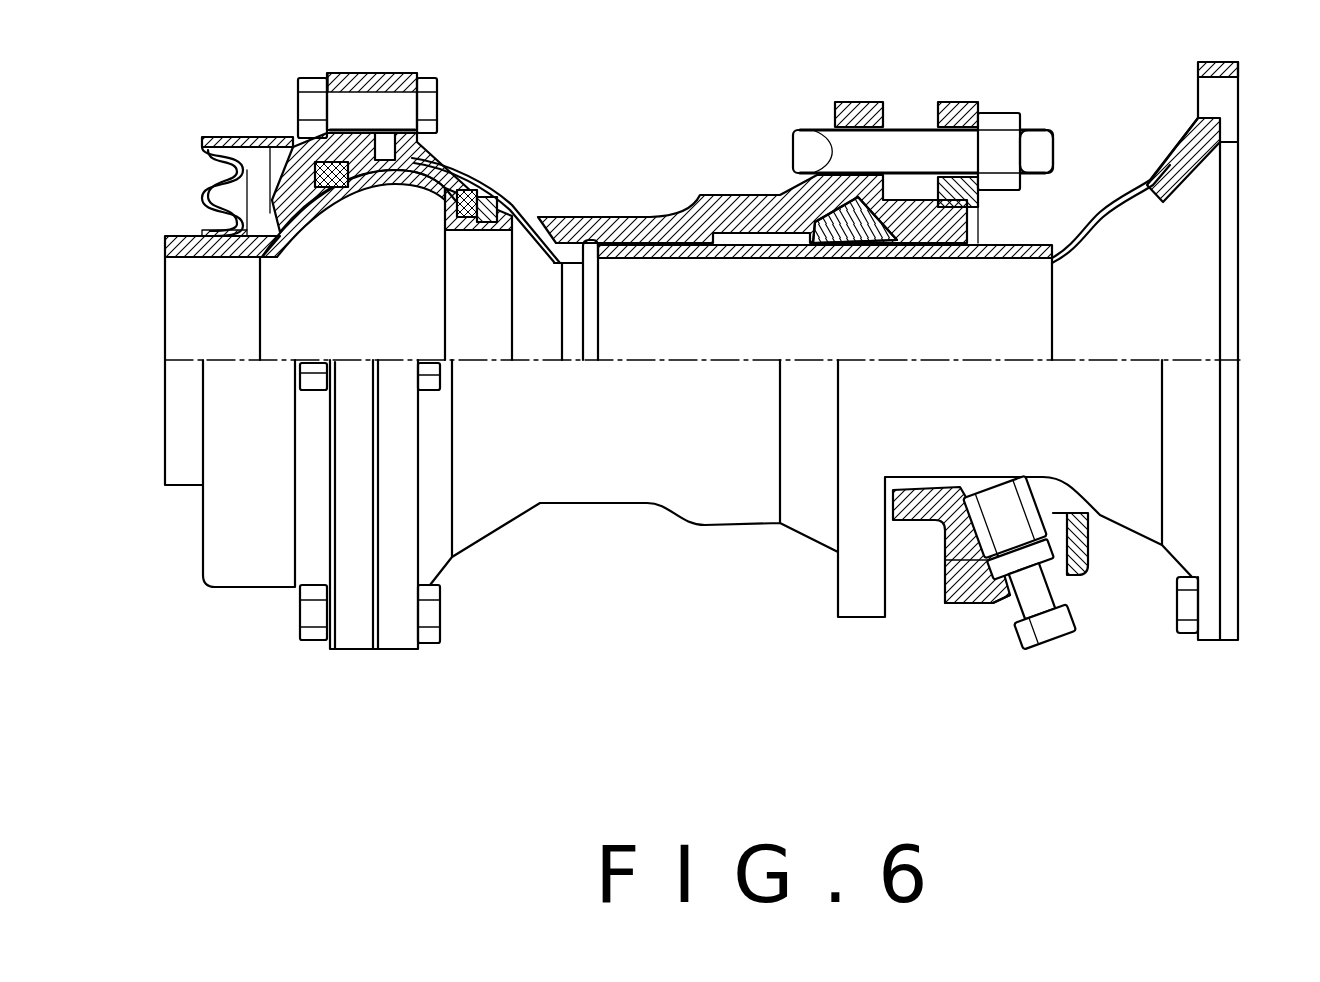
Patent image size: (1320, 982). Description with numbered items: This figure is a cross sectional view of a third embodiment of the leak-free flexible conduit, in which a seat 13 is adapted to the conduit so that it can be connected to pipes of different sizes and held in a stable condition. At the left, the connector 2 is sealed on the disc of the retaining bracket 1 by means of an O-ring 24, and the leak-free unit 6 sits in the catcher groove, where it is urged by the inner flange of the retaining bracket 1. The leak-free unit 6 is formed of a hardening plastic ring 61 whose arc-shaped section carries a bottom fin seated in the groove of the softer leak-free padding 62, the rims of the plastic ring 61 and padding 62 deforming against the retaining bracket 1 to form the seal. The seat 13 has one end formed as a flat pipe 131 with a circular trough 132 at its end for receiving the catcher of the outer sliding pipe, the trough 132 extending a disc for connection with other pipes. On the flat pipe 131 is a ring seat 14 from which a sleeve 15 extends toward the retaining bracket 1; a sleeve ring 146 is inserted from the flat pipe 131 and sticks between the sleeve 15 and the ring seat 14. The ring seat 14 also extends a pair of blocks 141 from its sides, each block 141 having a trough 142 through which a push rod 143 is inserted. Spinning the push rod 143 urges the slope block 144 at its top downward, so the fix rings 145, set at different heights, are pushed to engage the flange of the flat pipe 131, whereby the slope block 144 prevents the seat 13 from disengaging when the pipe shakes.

The retaining bracket 1 is at (510, 177).
The connector 2 is at (353, 78).
The leak-free unit 6 is at (492, 111).
The plastic ring 61 is at (483, 200).
The leak-free padding 62 is at (467, 187).
The seat 13 is at (1227, 72).
The flat pipe 131 is at (1017, 243).
The circular trough 132 is at (1135, 235).
The ring seat 14 is at (970, 105).
The block 141 is at (973, 587).
The trough 142 is at (1055, 538).
The push rod 143 is at (1037, 630).
The slope block 144 is at (943, 590).
The fix ring 145 is at (933, 517).
The sleeve ring 146 is at (857, 220).
The sleeve 15 is at (647, 220).
The O-ring 24 is at (390, 160).